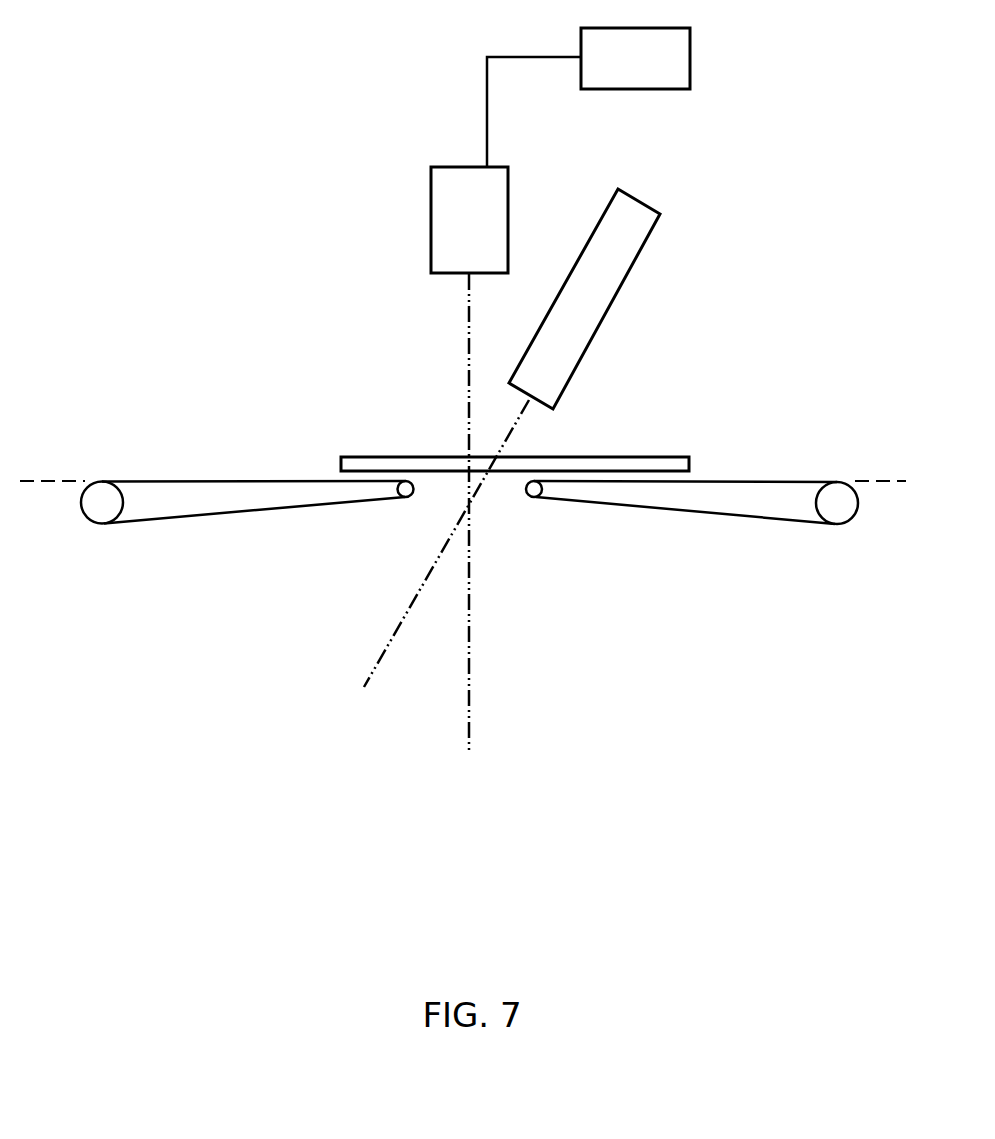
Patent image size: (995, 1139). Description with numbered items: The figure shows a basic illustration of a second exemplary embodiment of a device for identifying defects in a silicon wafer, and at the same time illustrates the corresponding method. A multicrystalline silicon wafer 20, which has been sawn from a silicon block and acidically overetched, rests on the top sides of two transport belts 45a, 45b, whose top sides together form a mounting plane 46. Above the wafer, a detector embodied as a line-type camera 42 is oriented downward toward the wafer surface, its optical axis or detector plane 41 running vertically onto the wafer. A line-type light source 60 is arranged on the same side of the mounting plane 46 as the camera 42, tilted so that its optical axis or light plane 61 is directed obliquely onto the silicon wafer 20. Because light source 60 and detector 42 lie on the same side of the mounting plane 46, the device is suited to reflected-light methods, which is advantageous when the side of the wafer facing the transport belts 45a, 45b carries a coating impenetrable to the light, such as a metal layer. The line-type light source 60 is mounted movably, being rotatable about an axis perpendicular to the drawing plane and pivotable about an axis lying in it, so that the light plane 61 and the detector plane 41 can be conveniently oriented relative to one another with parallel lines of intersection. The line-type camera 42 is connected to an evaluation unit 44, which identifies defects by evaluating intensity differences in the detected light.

The evaluation unit 44 is at (663, 65).
The line-type camera 42 is at (450, 192).
The detector plane 41 is at (469, 333).
The line-type light source 60 is at (630, 222).
The light plane 61 is at (382, 651).
The multicrystalline silicon wafer 20 is at (628, 463).
The transport belt 45a is at (265, 481).
The transport belt 45b is at (750, 479).
The mounting plane 46 is at (50, 481).